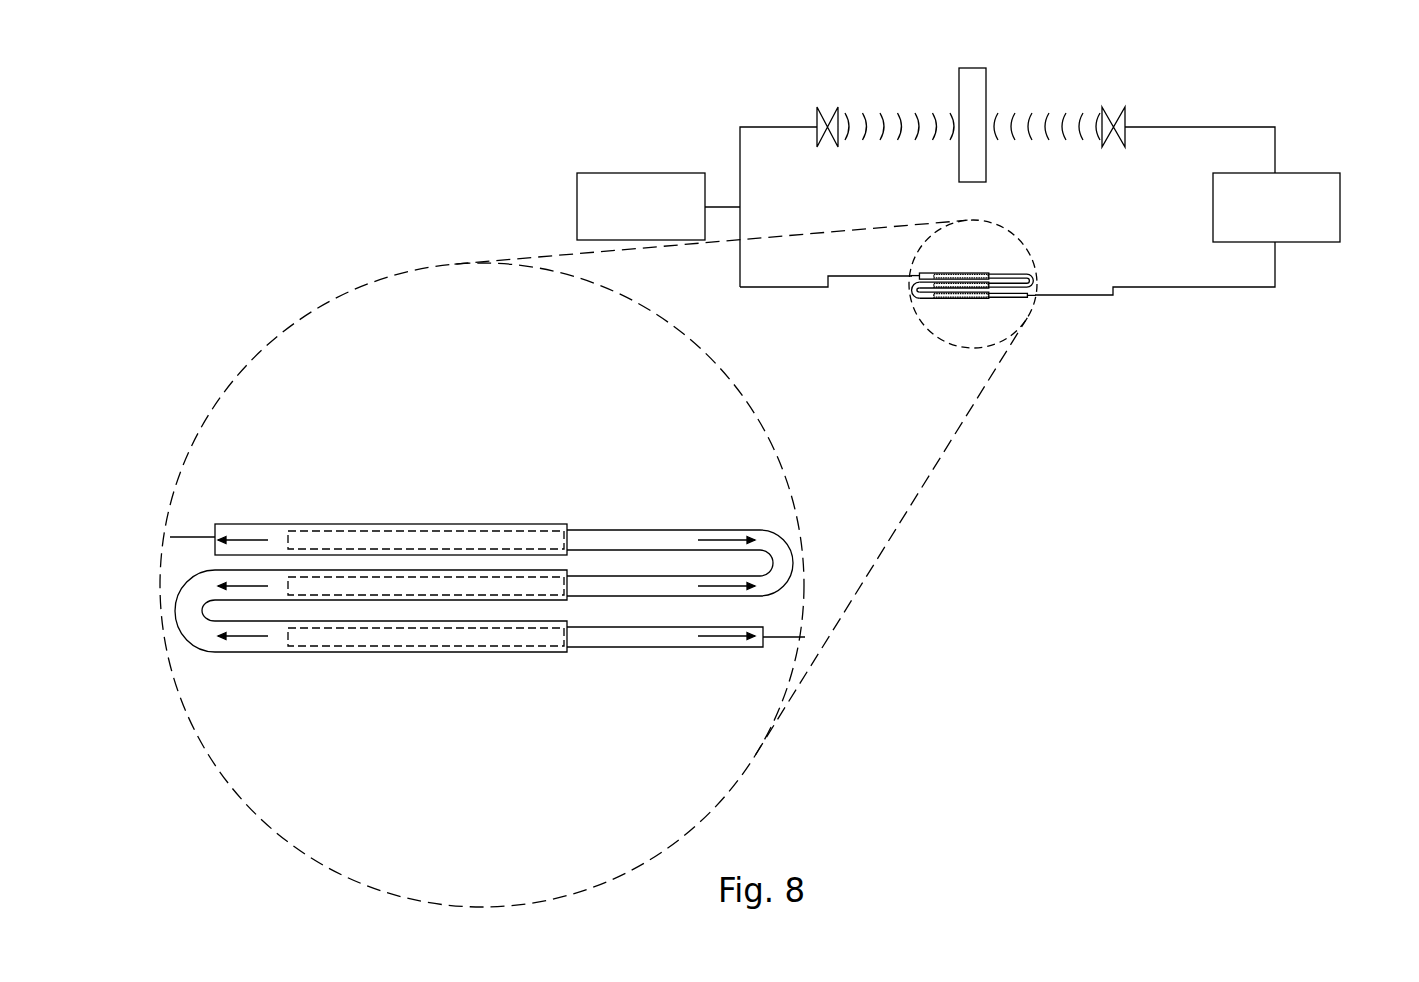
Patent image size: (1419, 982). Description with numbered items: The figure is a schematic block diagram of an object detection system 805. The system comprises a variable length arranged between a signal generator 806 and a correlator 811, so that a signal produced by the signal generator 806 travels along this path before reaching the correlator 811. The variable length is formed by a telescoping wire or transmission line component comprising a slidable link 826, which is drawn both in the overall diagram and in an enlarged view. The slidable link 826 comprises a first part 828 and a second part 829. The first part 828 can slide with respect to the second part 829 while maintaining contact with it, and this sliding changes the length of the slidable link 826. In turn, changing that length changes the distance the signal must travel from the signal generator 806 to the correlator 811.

The object detection system 805 is at (753, 92).
The signal generator 806 is at (588, 172).
The correlator 811 is at (1290, 172).
The slidable link 826 is at (517, 447).
The first part 828 is at (235, 653).
The second part 829 is at (683, 638).